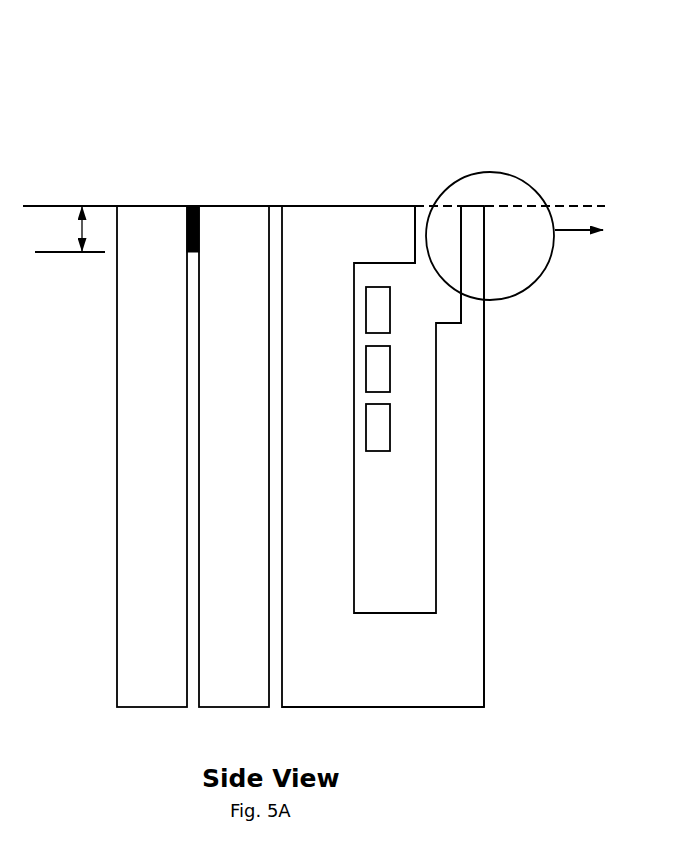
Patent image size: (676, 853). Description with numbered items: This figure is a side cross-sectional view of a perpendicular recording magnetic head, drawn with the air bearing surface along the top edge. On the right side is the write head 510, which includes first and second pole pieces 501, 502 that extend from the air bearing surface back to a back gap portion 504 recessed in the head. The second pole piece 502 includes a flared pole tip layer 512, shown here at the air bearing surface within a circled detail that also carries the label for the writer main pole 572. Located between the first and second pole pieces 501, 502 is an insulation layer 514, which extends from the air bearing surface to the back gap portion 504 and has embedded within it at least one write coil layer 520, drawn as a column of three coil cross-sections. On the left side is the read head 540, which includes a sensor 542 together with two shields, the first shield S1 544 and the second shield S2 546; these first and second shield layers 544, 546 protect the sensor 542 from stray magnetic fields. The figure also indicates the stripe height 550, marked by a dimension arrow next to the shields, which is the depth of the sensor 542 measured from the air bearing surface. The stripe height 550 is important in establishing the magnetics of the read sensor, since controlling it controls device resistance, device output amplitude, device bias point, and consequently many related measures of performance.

The write head 510 is at (393, 85).
The writer main pole 572 is at (475, 210).
The flared pole tip layer 512 is at (485, 215).
The insulation layer 514 is at (424, 213).
The first pole piece 501 is at (307, 230).
The second pole piece 502 is at (469, 533).
The back gap portion 504 is at (343, 673).
The write coil layer 520 is at (402, 325).
The read head 540 is at (138, 166).
The sensor 542 is at (202, 210).
The first shield S1 544 is at (152, 456).
The second shield S2 546 is at (234, 456).
The stripe height 550 is at (66, 245).